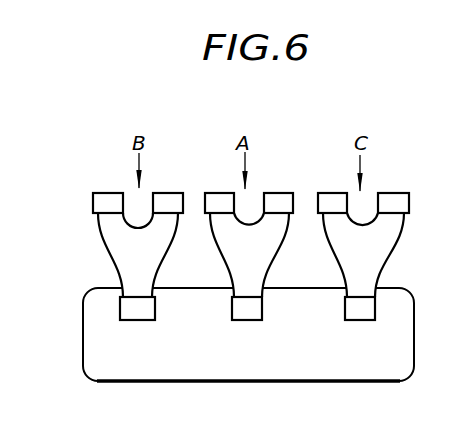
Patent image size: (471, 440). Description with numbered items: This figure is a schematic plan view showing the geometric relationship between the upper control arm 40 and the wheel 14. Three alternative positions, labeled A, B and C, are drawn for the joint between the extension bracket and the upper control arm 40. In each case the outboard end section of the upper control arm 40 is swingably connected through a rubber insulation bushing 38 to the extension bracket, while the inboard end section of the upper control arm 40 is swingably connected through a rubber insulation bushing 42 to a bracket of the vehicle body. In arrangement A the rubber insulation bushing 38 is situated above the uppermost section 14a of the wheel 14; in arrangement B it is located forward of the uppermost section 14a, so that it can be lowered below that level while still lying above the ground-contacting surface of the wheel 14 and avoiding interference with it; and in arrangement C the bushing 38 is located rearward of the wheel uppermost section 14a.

The wheel 14 is at (402, 327).
The uppermost section of the wheel 14a is at (242, 357).
The rubber insulation bushing 38 is at (120, 306).
The upper control arm 40 is at (112, 250).
The rubber insulation bushing 42 is at (98, 201).